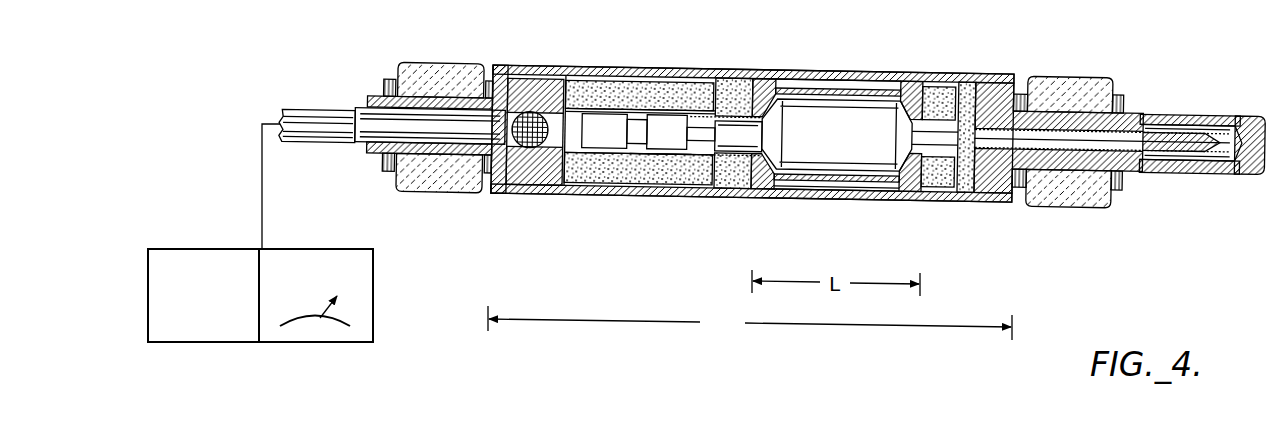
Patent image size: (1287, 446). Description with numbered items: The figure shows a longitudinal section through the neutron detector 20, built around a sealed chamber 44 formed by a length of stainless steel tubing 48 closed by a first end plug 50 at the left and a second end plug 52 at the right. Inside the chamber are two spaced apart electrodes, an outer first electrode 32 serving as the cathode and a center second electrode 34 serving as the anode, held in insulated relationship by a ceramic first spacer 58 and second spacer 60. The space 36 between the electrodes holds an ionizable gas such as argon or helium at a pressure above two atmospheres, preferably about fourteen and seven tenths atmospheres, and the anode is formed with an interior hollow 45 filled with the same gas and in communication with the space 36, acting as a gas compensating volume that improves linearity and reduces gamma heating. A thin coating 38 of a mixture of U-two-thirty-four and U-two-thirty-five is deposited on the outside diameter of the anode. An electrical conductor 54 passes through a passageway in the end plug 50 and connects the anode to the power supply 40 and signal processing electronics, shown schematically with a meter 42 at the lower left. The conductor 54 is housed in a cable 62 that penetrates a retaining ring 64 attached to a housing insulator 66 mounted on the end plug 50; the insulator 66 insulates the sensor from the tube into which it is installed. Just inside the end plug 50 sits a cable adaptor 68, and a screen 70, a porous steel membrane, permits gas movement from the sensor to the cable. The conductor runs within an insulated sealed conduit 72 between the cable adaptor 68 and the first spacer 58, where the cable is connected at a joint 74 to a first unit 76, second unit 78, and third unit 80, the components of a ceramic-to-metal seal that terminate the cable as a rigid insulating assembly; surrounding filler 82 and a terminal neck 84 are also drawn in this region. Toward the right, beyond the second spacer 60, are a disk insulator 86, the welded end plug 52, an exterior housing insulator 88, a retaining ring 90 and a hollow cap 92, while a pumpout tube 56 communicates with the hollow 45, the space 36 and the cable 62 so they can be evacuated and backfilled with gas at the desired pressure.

The neutron detector 20 is at (1172, 36).
The first electrode 32 is at (800, 73).
The second electrode 34 is at (845, 90).
The space 36 is at (763, 76).
The thin coating 38 is at (815, 194).
The power supply 40 is at (188, 249).
The meter 42 is at (325, 249).
The sealed chamber 44 is at (750, 323).
The interior hollow 45 is at (836, 135).
The stainless steel tubing 48 is at (905, 74).
The first end plug 50 is at (492, 65).
The second end plug 52 is at (1018, 80).
The electrical conductor 54 is at (262, 185).
The pumpout tube 56 is at (1185, 117).
The first spacer 58 is at (728, 84).
The second spacer 60 is at (940, 92).
The cable 62 is at (296, 108).
The retaining ring 64 is at (391, 80).
The housing insulator 66 is at (440, 63).
The cable adaptor 68 is at (540, 80).
The screen 70 is at (505, 189).
The insulated sealed conduit 72 is at (637, 108).
The joint 74 is at (575, 145).
The first unit 76 is at (615, 131).
The second unit 78 is at (637, 155).
The third unit 80 is at (667, 132).
The insulating filler 82 is at (590, 85).
The terminal neck 84 is at (700, 148).
The disk insulator 86 is at (970, 90).
The housing insulator 88 is at (1080, 78).
The retaining ring 90 is at (1120, 95).
The hollow cap 92 is at (1250, 117).